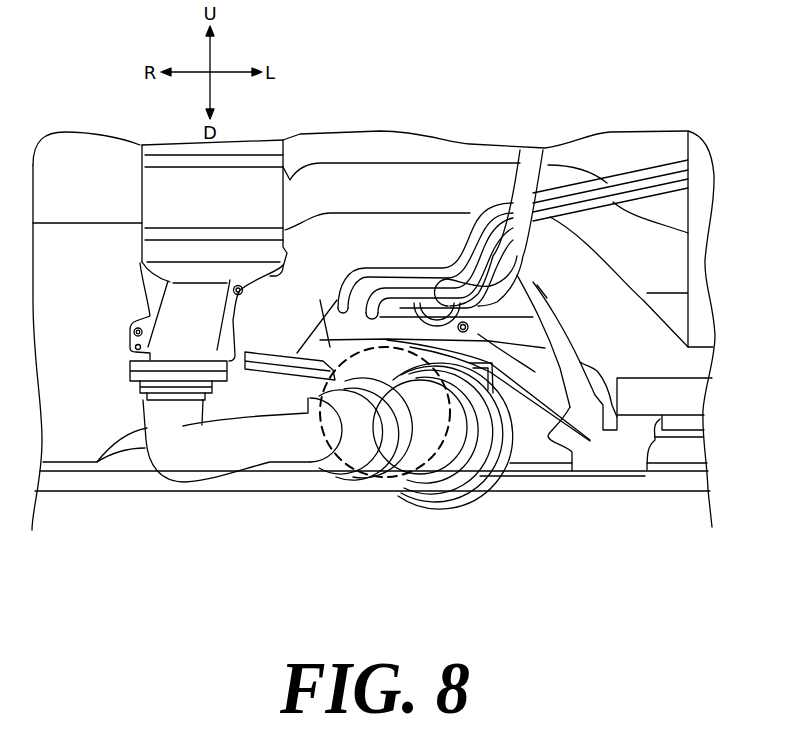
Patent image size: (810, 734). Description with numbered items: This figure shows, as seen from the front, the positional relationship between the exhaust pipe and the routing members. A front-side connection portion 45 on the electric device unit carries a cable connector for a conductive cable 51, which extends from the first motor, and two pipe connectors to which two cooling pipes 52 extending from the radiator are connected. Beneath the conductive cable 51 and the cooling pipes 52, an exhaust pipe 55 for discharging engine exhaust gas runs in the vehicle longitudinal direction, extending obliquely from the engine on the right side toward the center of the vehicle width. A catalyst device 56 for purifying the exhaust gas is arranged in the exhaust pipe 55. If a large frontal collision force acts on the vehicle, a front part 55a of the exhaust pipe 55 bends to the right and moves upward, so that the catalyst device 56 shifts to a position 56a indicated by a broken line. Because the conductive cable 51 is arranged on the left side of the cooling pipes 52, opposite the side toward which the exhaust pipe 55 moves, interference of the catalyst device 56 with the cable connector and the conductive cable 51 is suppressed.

The front-side connection portion 45 is at (420, 266).
The conductive cable 51 is at (530, 183).
The cooling pipes 52 is at (648, 180).
The exhaust pipe 55 is at (225, 458).
The front part of the exhaust pipe 55a is at (417, 447).
The catalyst device 56 is at (470, 457).
The position of the catalyst device after bending 56a is at (333, 457).